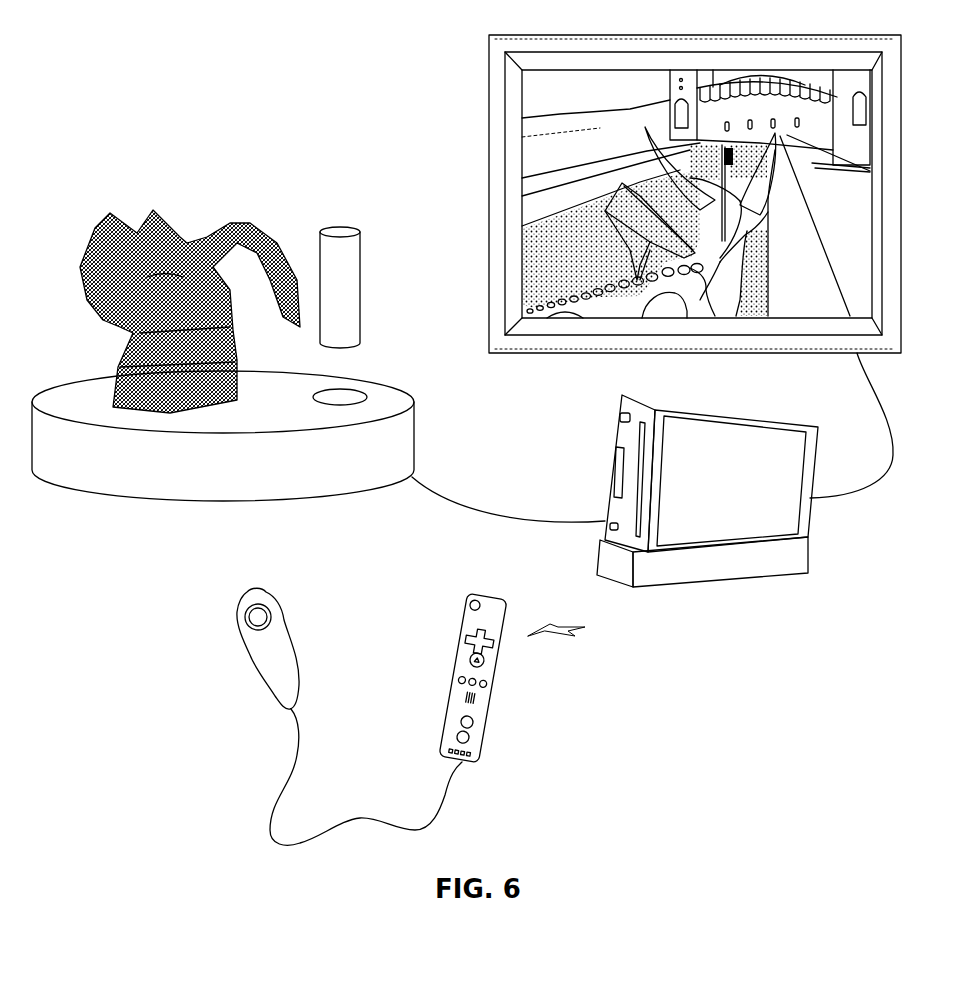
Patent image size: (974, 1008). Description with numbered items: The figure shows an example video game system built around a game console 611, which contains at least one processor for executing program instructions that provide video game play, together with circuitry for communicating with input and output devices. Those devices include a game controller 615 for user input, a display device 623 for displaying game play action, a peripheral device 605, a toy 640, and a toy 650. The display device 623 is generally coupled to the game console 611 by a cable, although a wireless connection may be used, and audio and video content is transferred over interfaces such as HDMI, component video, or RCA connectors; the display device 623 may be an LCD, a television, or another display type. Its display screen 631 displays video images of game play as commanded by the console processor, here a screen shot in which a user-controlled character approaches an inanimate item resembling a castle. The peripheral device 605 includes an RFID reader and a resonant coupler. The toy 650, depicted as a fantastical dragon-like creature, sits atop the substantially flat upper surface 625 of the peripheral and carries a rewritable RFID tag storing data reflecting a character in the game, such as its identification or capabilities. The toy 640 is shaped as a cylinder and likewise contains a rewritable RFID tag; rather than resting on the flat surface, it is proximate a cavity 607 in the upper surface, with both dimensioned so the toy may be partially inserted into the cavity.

The peripheral device 605 is at (118, 500).
The cavity 607 is at (367, 400).
The game console 611 is at (795, 573).
The game controller 615 is at (492, 668).
The display device 623 is at (902, 292).
The substantially flat upper surface 625 is at (68, 402).
The display screen 631 is at (872, 167).
The toy 640 is at (362, 251).
The toy 650 is at (268, 228).